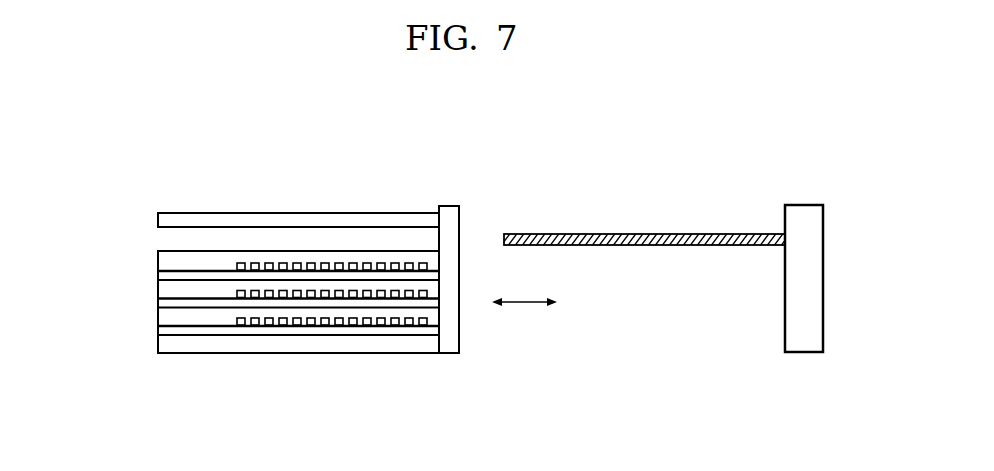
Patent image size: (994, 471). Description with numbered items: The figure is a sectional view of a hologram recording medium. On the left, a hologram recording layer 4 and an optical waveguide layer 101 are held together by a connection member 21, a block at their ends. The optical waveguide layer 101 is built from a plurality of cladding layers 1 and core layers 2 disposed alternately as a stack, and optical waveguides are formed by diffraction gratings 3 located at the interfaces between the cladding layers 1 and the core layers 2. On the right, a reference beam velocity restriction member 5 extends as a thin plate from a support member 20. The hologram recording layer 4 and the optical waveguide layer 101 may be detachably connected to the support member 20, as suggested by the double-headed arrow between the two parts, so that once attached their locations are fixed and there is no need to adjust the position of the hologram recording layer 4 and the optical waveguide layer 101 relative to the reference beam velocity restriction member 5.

The optical waveguide layer 101 is at (100, 246).
The cladding layer 1 is at (158, 265).
The core layer 2 is at (201, 273).
The diffraction grating 3 is at (340, 272).
The hologram recording layer 4 is at (312, 213).
The connection member 21 is at (462, 213).
The reference beam velocity restriction member 5 is at (620, 233).
The support member 20 is at (810, 275).